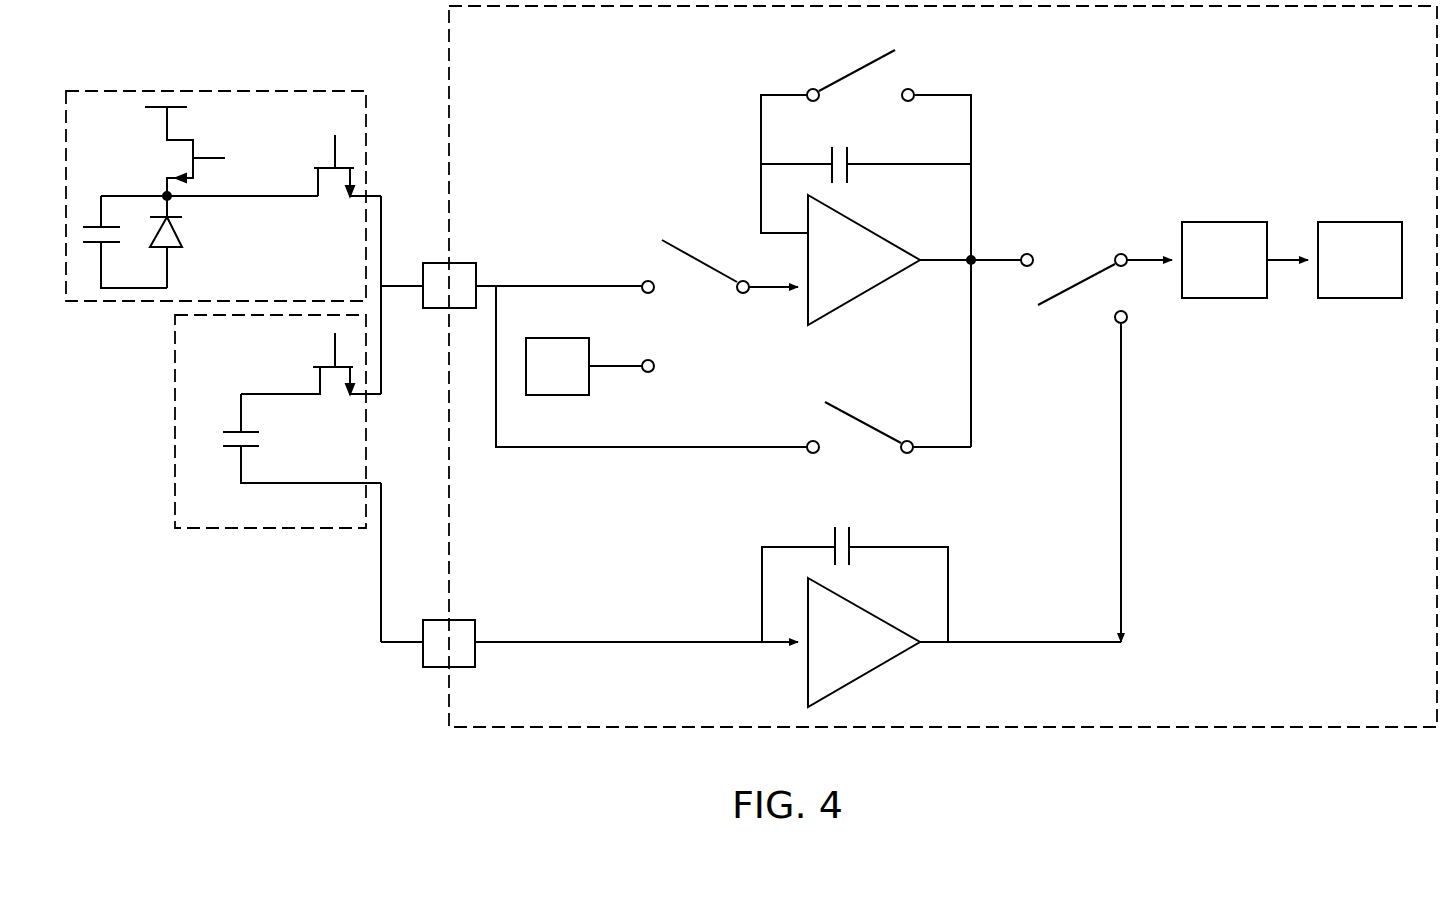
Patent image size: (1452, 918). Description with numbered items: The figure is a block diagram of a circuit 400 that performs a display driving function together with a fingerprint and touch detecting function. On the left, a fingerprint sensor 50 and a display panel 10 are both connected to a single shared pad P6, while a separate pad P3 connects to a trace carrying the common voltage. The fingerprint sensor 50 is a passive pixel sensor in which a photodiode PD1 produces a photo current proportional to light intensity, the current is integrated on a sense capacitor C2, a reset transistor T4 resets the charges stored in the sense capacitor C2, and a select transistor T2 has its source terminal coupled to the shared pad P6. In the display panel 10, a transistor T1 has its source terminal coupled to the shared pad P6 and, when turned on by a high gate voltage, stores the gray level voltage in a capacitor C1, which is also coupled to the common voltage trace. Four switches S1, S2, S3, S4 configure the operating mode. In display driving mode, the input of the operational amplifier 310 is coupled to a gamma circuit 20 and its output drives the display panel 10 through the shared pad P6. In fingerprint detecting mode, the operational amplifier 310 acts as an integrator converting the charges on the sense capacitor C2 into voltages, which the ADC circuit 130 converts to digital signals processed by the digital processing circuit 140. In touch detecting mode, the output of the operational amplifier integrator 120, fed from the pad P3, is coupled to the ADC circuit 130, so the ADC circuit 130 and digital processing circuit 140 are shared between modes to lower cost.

The circuit 400 is at (1408, 708).
The fingerprint sensor 50 is at (287, 90).
The display panel 10 is at (175, 490).
The gamma circuit 20 is at (543, 380).
The operational amplifier 310 is at (868, 274).
The operational amplifier integrator 120 is at (823, 658).
The ADC circuit 130 is at (1201, 273).
The digital processing circuit 140 is at (1337, 273).
The shared pad P6 is at (436, 300).
The pad P3 is at (436, 658).
The transistor T1 is at (311, 380).
The select transistor T2 is at (347, 181).
The reset transistor T4 is at (178, 151).
The capacitor C1 is at (283, 438).
The sense capacitor C2 is at (125, 242).
The photodiode PD1 is at (187, 242).
The switch S1 is at (720, 262).
The switch S2 is at (889, 423).
The switch S3 is at (1105, 448).
The switch S4 is at (860, 70).